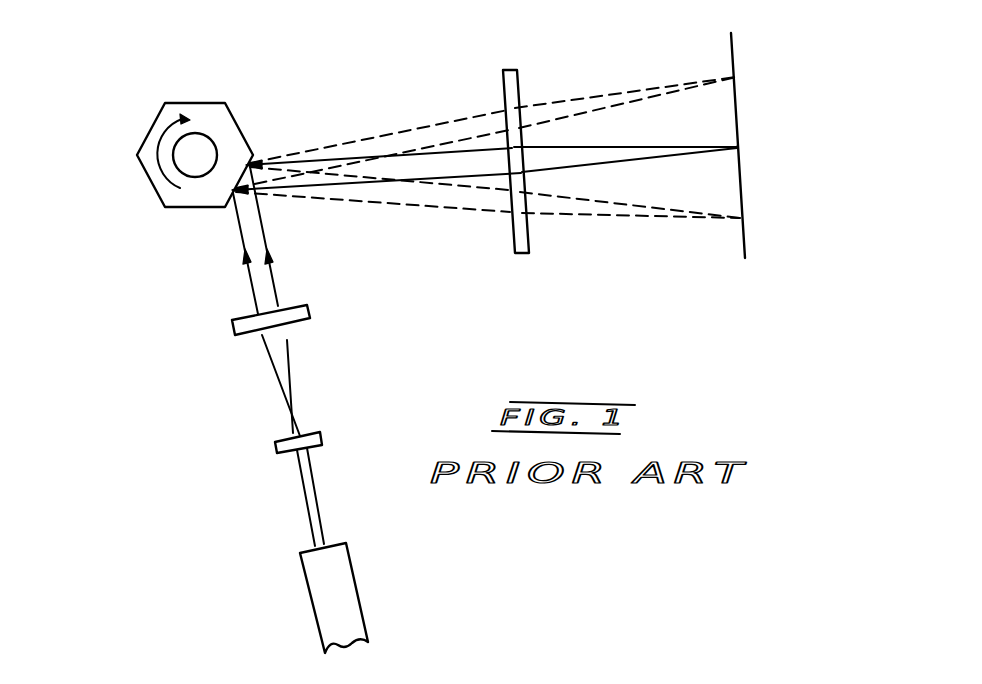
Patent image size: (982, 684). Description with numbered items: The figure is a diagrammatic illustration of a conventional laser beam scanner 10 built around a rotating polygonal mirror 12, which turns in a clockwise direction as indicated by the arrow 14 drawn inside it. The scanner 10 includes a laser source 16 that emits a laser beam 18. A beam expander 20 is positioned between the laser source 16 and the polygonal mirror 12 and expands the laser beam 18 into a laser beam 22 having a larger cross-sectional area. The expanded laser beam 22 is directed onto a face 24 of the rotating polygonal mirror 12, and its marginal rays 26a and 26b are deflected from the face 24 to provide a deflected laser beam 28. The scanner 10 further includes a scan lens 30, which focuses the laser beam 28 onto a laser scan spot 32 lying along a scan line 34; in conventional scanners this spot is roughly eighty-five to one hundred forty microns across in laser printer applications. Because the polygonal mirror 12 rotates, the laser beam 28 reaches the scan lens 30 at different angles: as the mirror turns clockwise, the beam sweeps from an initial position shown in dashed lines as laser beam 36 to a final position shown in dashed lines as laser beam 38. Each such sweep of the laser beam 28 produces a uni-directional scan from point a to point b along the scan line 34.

The laser beam scanner 10 is at (131, 236).
The rotating polygonal mirror 12 is at (158, 118).
The arrow 14 is at (162, 173).
The laser source 16 is at (312, 607).
The laser beam 18 is at (318, 493).
The beam expander 20 is at (232, 313).
The laser beam 22 is at (277, 300).
The face 24 is at (242, 240).
The marginal ray 26a is at (275, 275).
The marginal ray 26b is at (251, 283).
The laser beam 28 is at (395, 163).
The scan lens 30 is at (518, 82).
The laser scan spot 32 is at (738, 147).
The scan line 34 is at (733, 53).
The laser beam 36 is at (411, 126).
The laser beam 38 is at (396, 196).